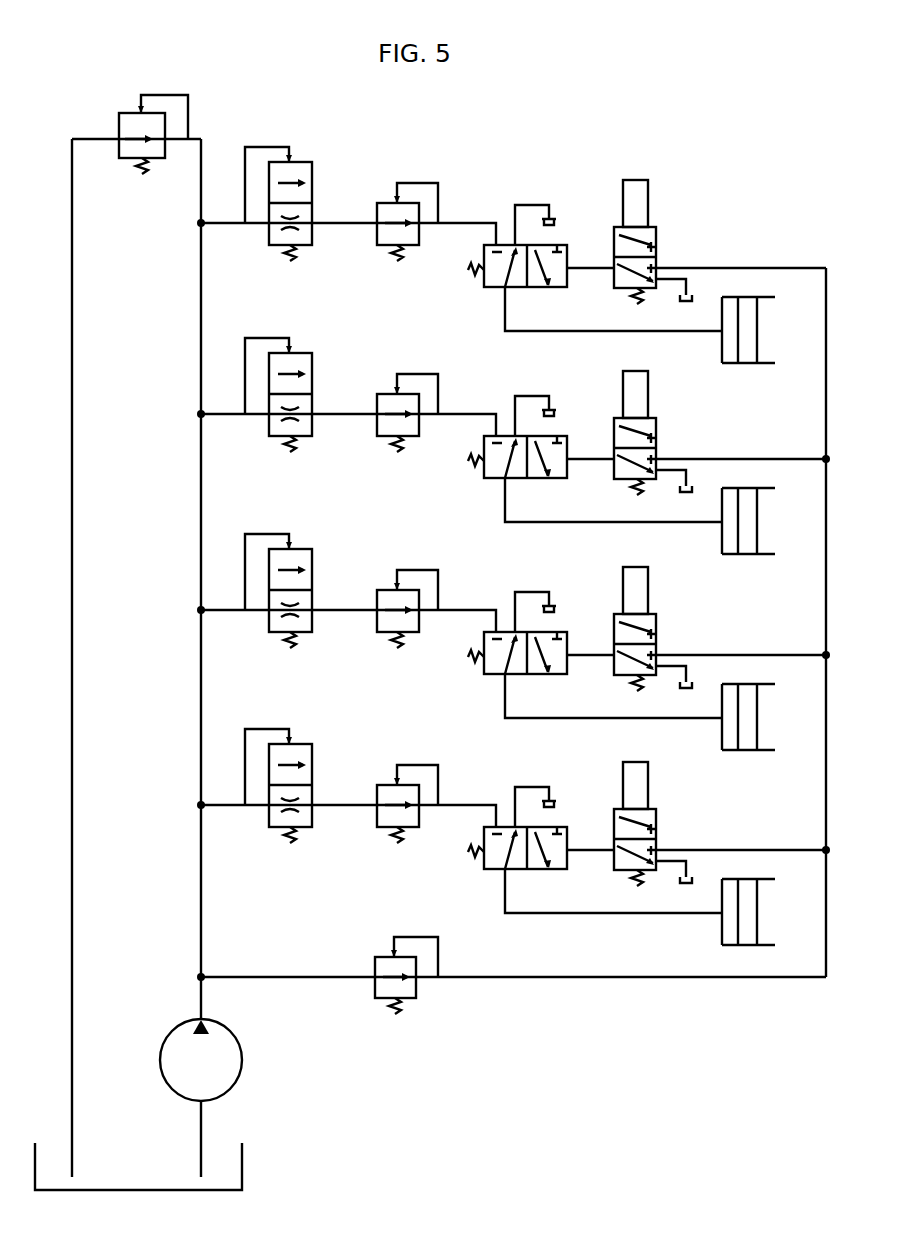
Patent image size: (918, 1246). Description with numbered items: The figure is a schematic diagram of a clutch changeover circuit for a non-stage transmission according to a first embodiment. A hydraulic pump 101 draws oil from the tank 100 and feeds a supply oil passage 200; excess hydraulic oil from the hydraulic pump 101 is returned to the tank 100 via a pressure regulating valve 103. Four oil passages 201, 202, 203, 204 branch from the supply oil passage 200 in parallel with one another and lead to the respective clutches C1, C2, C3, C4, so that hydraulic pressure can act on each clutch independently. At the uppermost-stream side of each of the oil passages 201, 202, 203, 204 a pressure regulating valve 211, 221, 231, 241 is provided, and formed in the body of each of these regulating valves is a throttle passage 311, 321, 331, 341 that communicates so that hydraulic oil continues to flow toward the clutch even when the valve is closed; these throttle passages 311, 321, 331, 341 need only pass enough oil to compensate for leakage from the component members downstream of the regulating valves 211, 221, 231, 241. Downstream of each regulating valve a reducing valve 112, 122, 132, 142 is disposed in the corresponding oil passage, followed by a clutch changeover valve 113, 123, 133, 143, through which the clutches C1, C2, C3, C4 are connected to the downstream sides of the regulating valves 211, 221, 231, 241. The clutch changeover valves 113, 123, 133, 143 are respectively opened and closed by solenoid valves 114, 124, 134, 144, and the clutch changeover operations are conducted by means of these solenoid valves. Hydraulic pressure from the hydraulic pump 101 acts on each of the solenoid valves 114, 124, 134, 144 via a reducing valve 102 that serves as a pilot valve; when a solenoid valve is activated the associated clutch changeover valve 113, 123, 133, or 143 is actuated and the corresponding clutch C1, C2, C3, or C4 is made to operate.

The tank 100 is at (244, 1165).
The hydraulic pump 101 is at (243, 1063).
The reducing valve 102 is at (417, 993).
The pressure regulating valve 103 is at (122, 113).
The supply oil passage 200 is at (200, 350).
The oil passage 201 is at (311, 820).
The oil passage 202 is at (311, 628).
The oil passage 203 is at (311, 436).
The oil passage 204 is at (222, 225).
The pressure regulating valve 211 is at (272, 812).
The pressure regulating valve 221 is at (272, 615).
The pressure regulating valve 231 is at (268, 418).
The pressure regulating valve 241 is at (278, 248).
The throttle passage 311 is at (337, 758).
The throttle passage 321 is at (337, 565).
The throttle passage 331 is at (342, 368).
The throttle passage 341 is at (297, 212).
The reducing valve 112 is at (390, 830).
The reducing valve 122 is at (391, 633).
The reducing valve 132 is at (396, 436).
The reducing valve 142 is at (390, 248).
The clutch changeover valve 113 is at (571, 854).
The clutch changeover valve 123 is at (578, 662).
The clutch changeover valve 133 is at (581, 464).
The clutch changeover valve 143 is at (497, 288).
The solenoid valve 114 is at (722, 824).
The solenoid valve 124 is at (722, 629).
The solenoid valve 134 is at (722, 433).
The solenoid valve 144 is at (659, 231).
The clutch C1 is at (715, 918).
The clutch C2 is at (752, 737).
The clutch C3 is at (752, 543).
The clutch C4 is at (755, 364).